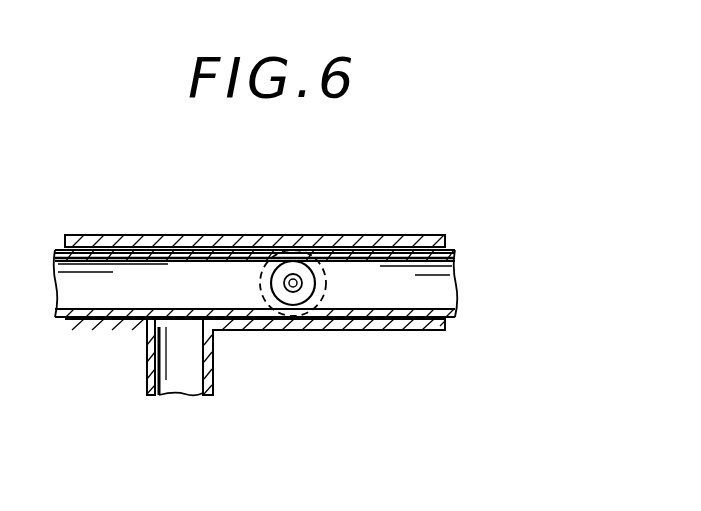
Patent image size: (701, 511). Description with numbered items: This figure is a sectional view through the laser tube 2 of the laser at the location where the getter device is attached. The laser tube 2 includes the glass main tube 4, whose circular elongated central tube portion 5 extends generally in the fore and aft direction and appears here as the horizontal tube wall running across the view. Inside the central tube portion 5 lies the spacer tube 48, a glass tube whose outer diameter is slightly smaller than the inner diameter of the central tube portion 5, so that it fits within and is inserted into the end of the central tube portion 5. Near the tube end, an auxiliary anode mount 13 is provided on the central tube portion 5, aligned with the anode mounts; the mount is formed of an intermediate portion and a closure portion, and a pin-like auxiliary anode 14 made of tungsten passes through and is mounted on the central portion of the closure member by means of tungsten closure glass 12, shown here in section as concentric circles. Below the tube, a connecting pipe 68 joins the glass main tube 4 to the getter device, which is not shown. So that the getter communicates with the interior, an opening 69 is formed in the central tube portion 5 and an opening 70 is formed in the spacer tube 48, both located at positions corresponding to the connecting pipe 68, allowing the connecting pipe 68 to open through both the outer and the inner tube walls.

The laser tube 2 is at (282, 237).
The glass main tube 4 is at (213, 237).
The central tube portion 5 is at (240, 237).
The tungsten closure glass 12 is at (293, 290).
The auxiliary anode mount 13 is at (318, 258).
The auxiliary anode 14 is at (298, 288).
The spacer tube 48 is at (87, 237).
The connecting pipe 68 is at (147, 370).
The opening 69 is at (170, 328).
The opening 70 is at (197, 313).